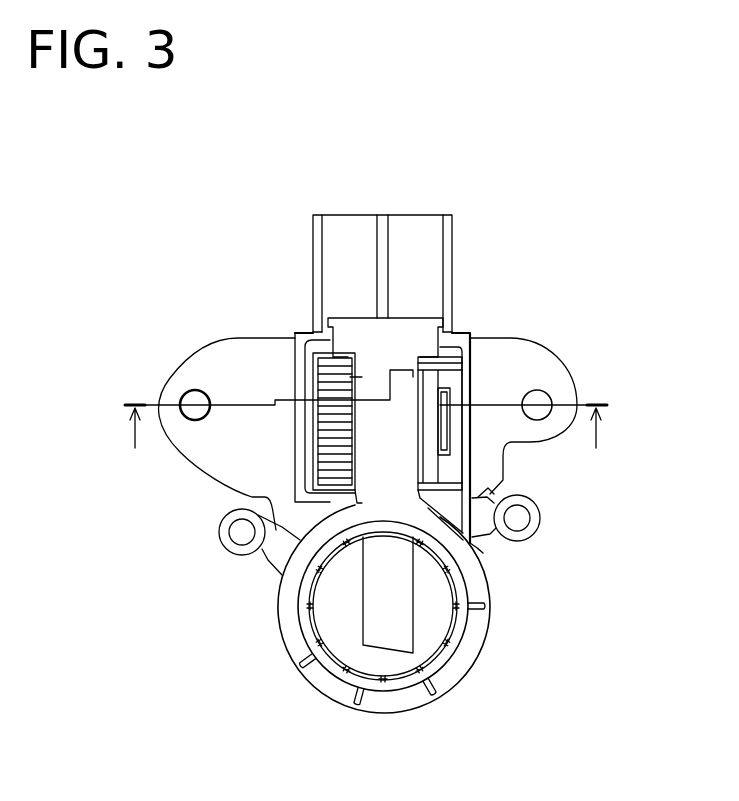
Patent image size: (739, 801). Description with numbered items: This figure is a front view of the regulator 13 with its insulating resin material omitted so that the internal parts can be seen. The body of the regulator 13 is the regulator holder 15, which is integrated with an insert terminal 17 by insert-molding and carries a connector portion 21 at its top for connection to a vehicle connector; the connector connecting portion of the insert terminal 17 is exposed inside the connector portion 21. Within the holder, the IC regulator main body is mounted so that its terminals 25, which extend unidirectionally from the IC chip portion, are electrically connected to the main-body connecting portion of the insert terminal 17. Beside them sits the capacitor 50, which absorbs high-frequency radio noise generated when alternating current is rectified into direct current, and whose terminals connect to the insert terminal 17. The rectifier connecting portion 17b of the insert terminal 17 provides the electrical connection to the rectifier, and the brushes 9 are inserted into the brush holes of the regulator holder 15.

The regulator 13 is at (258, 266).
The connector portion 21 is at (453, 240).
The terminals 25 is at (333, 378).
The regulator holder 15 is at (470, 363).
The capacitor 50 is at (432, 472).
The rectifier connecting portion 17b is at (221, 546).
The insert terminal 17 is at (541, 526).
The brushes 9 is at (391, 632).